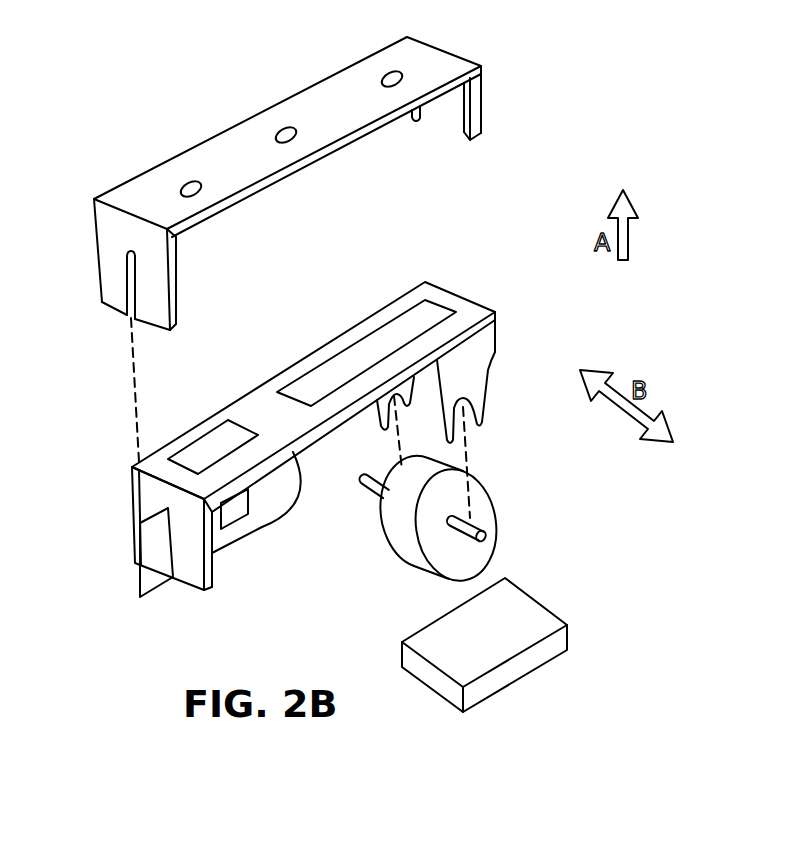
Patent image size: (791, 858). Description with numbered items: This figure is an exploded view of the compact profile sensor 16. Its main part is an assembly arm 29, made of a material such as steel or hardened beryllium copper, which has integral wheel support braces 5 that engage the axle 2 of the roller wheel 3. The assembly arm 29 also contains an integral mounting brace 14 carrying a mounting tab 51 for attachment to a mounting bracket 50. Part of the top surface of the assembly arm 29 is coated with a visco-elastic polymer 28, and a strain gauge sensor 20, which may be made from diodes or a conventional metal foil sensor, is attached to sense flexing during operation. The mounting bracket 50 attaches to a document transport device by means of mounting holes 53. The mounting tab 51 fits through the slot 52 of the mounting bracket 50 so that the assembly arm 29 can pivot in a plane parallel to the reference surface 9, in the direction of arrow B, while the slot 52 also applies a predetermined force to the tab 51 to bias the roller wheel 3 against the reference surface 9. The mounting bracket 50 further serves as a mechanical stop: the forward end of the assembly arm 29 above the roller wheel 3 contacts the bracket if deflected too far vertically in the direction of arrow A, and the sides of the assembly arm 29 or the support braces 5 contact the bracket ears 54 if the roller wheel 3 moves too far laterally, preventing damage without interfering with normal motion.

The axle 2 is at (480, 532).
The roller wheel 3 is at (490, 491).
The wheel support braces 5 is at (377, 422).
The reference surface 9 is at (542, 602).
The mounting brace 14 is at (268, 497).
The compact profile sensor 16 is at (611, 86).
The strain gauge sensor 20 is at (222, 445).
The visco-elastic polymer 28 is at (380, 338).
The assembly arm 29 is at (453, 302).
The mounting bracket 50 is at (327, 93).
The mounting tab 51 is at (153, 567).
The slot 52 is at (130, 265).
The mounting holes 53 is at (282, 136).
The bracket ears 54 is at (478, 107).